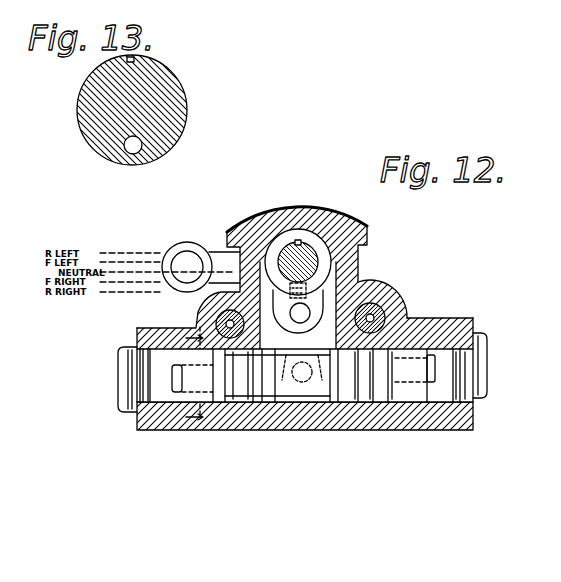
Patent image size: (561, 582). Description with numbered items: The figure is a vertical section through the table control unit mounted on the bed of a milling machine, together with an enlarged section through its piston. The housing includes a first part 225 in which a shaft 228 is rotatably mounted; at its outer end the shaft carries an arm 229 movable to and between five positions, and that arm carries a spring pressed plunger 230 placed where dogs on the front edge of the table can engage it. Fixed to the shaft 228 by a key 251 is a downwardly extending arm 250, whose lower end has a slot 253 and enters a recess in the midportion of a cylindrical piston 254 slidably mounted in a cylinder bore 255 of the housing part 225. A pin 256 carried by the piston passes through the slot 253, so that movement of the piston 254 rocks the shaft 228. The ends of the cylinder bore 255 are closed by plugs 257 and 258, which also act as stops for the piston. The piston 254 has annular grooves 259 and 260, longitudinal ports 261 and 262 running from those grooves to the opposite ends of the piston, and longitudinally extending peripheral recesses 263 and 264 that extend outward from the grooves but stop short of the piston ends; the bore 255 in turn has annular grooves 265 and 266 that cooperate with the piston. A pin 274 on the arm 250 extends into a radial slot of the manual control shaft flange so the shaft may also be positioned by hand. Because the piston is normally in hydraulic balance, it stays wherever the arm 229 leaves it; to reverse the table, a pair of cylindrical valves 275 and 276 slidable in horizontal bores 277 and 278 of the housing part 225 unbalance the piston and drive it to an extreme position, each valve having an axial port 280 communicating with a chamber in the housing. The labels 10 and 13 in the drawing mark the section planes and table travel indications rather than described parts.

In FIG. 12, the shift lever travel 10 is at (153, 270).
In FIG. 12, the pin 13 is at (202, 300).
In FIG. 12, the first housing part 225 is at (400, 308).
In FIG. 12, the shaft 228 is at (306, 236).
In FIG. 12, the arm 229 is at (217, 268).
In FIG. 12, the spring pressed plunger 230 is at (190, 248).
In FIG. 12, the downwardly extending arm 250 is at (368, 225).
In FIG. 12, the key 251 is at (296, 240).
In FIG. 12, the slot 253 is at (325, 305).
In FIG. 13, the piston 254 is at (179, 134).
In FIG. 12, the piston 254 is at (302, 382).
In FIG. 12, the cylinder bore 255 is at (238, 402).
In FIG. 12, the pin 256 is at (306, 384).
In FIG. 12, the plug 257 is at (121, 388).
In FIG. 12, the plug 258 is at (487, 372).
In FIG. 12, the annular groove 259 is at (258, 402).
In FIG. 12, the annular groove 260 is at (390, 402).
In FIG. 13, the longitudinal port 261 is at (133, 152).
In FIG. 12, the longitudinal port 261 is at (176, 404).
In FIG. 12, the longitudinal port 262 is at (428, 420).
In FIG. 13, the peripheral recess 263 is at (134, 58).
In FIG. 12, the peripheral recess 263 is at (192, 378).
In FIG. 12, the peripheral recess 264 is at (415, 369).
In FIG. 12, the annular groove 265 is at (246, 402).
In FIG. 12, the annular groove 266 is at (405, 316).
In FIG. 12, the pin 274 is at (356, 262).
In FIG. 12, the cylindrical valve 275 is at (358, 262).
In FIG. 12, the cylindrical valve 276 is at (386, 303).
In FIG. 12, the horizontal bore 277 is at (205, 300).
In FIG. 12, the horizontal bore 278 is at (388, 288).
In FIG. 12, the axial port 280 is at (192, 318).